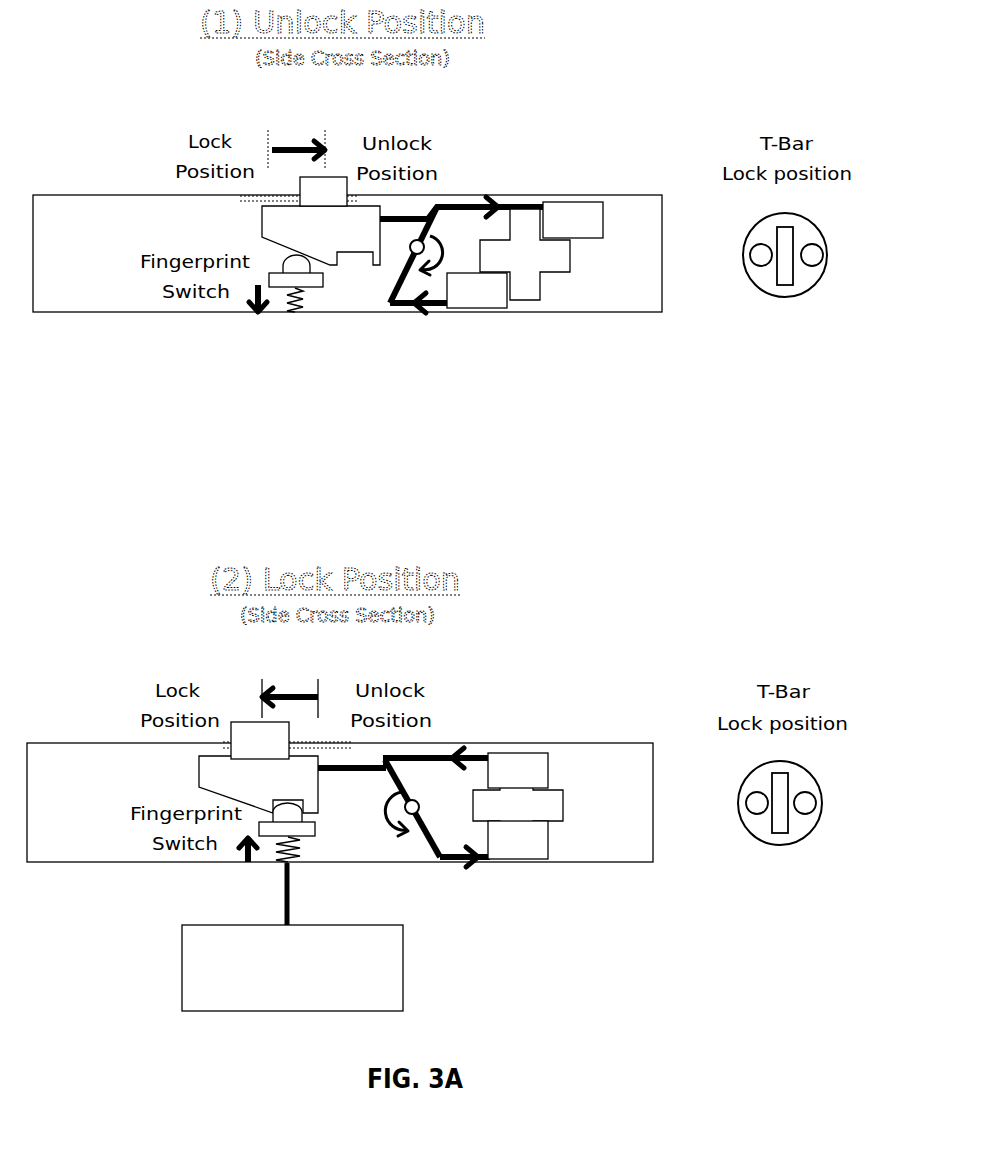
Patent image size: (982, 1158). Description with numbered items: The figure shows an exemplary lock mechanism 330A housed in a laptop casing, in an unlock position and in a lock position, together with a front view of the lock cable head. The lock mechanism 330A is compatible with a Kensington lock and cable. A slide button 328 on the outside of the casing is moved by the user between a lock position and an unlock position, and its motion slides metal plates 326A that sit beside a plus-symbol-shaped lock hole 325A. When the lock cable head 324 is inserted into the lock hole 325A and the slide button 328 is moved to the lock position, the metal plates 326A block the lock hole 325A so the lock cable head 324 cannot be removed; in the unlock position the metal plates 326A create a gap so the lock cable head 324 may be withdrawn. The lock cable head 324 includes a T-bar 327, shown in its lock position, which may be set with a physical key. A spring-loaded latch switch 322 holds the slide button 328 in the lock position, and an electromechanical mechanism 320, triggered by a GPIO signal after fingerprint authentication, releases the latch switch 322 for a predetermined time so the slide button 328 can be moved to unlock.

The electromechanical mechanism 320 is at (182, 972).
The latch switch 322 is at (300, 290).
The lock cable head 324 is at (730, 257).
The lock hole 325A is at (522, 300).
The metal plates 326A is at (477, 283).
The T-bar 327 is at (792, 238).
The slide button 328 is at (318, 178).
The lock mechanism 330A is at (118, 298).